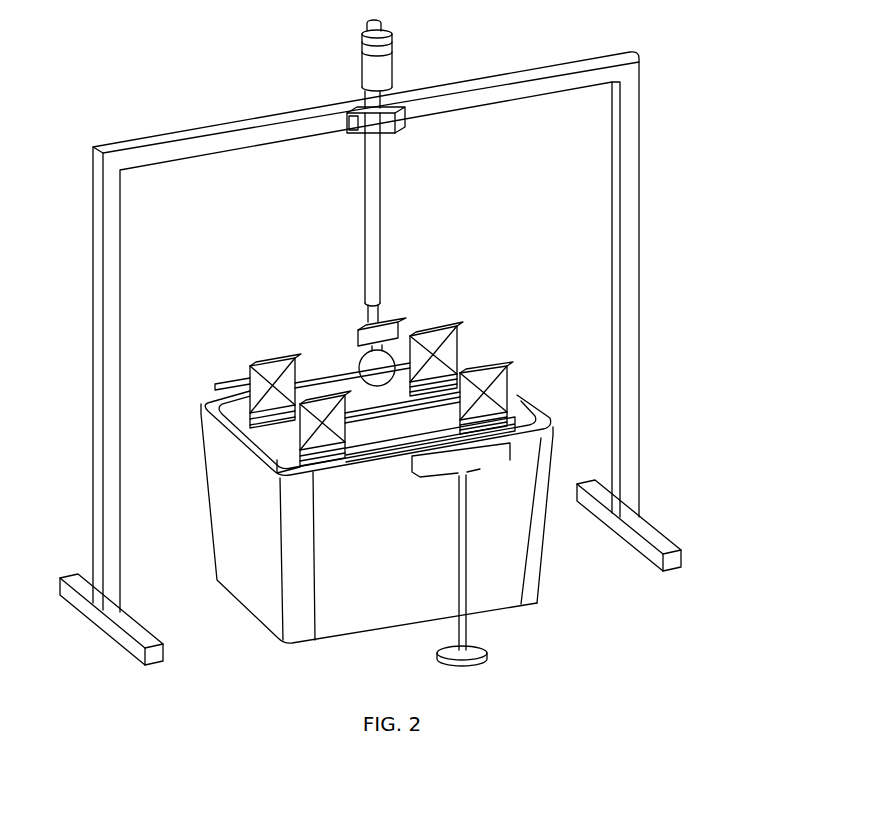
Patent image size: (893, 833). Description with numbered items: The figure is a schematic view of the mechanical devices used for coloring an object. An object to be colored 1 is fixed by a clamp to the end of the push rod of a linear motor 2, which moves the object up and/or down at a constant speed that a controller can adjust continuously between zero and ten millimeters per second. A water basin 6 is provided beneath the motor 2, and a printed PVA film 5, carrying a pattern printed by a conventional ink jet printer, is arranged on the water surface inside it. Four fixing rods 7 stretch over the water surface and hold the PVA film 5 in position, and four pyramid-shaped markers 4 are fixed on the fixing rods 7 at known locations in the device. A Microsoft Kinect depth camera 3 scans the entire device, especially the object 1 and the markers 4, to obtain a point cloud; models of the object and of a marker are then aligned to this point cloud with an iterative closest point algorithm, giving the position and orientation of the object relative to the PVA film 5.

The object to be colored 1 is at (368, 365).
The linear motor 2 is at (372, 158).
The depth camera 3 is at (462, 462).
The marker 4 is at (262, 390).
The PVA film 5 is at (400, 413).
The water basin 6 is at (492, 568).
The fixing rod 7 is at (300, 434).